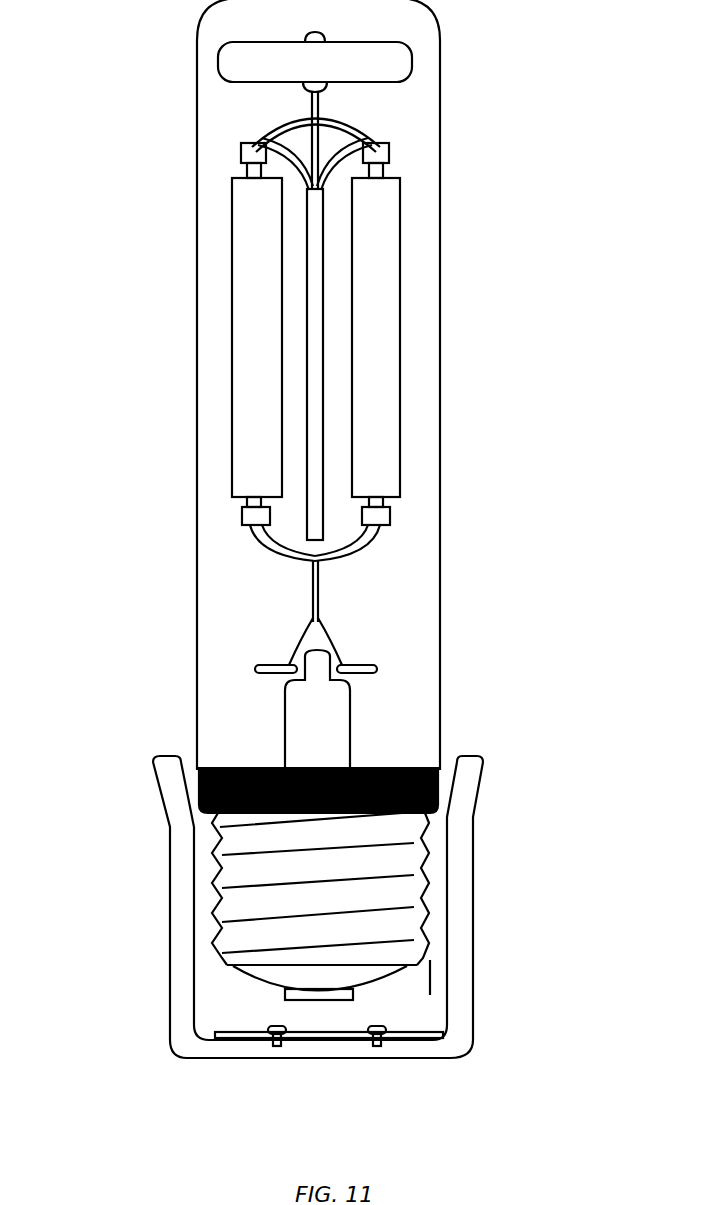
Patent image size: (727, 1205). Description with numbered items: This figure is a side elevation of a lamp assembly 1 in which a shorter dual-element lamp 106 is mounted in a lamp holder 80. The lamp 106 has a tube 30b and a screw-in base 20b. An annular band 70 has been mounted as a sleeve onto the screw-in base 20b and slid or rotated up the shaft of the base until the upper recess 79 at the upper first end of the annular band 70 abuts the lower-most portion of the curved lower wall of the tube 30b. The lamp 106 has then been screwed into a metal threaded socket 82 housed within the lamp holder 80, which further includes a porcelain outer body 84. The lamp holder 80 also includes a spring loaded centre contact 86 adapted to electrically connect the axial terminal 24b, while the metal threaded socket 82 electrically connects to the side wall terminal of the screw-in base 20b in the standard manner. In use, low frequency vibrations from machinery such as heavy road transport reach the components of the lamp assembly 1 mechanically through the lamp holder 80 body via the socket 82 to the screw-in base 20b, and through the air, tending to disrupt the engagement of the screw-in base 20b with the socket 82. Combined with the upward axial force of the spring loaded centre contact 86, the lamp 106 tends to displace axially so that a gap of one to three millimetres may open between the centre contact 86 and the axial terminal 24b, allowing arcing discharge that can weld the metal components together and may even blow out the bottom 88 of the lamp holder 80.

The lamp assembly 1 is at (85, 490).
The light source assembly 106 is at (485, 408).
The tube 30b is at (427, 544).
The upper recess 79 is at (218, 758).
The annular band 70 is at (387, 767).
The screw-in base 20b is at (400, 865).
The metal threaded socket 82 is at (217, 913).
The axial terminal 24b is at (237, 1034).
The lamp holder 80 is at (147, 870).
The porcelain outer body 84 is at (460, 936).
The spring loaded centre contact 86 is at (258, 1018).
The bottom 88 is at (210, 1046).